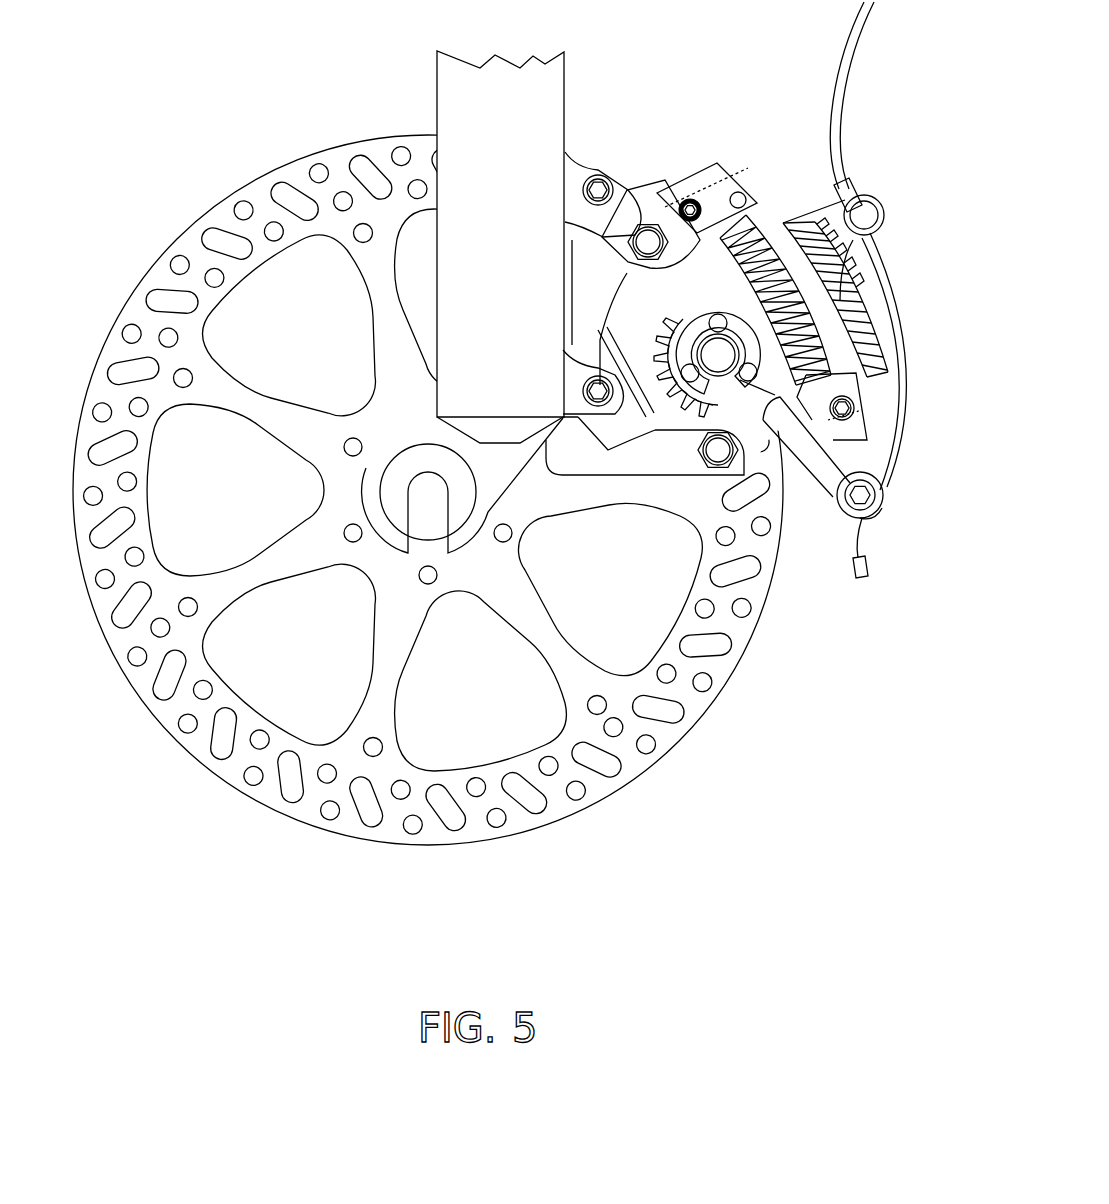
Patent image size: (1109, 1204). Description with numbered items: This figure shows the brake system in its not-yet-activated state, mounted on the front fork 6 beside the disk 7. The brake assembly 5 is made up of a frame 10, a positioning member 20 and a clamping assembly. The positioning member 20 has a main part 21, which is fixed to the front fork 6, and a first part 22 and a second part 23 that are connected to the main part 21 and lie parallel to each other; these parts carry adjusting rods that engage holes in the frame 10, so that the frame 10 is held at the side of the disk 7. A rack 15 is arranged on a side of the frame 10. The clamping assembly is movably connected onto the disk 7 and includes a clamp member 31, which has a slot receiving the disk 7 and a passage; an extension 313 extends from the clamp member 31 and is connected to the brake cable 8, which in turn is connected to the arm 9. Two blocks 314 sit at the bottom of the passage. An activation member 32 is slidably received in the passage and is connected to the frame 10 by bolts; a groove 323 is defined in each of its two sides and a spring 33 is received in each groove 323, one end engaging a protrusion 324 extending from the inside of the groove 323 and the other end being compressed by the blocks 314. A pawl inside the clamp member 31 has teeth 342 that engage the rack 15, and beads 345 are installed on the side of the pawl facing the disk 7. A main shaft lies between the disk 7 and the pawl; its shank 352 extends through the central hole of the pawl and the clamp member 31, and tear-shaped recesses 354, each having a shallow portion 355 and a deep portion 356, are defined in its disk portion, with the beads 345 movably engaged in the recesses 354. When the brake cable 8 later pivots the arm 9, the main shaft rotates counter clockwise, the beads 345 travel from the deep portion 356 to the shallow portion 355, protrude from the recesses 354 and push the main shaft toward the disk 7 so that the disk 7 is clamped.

The brake assembly 5 is at (731, 102).
The front fork 6 is at (455, 107).
The disk 7 is at (260, 198).
The brake cable 8 is at (895, 513).
The arm 9 is at (863, 512).
The frame 10 is at (662, 228).
The rack 15 is at (660, 410).
The positioning member 20 is at (631, 240).
The main part 21 is at (588, 270).
The first part 22 is at (625, 185).
The second part 23 is at (677, 465).
The clamp member 31 is at (838, 288).
The extension 313 is at (870, 203).
The blocks 314 is at (822, 380).
The activation member 32 is at (705, 185).
The groove 323 is at (784, 270).
The protrusion 324 is at (740, 226).
The spring 33 is at (748, 258).
The teeth 342 is at (620, 413).
The beads 345 is at (719, 215).
The shank 352 is at (730, 425).
The tear-shaped recesses 354 is at (688, 203).
The shallow portion 355 is at (727, 382).
The deep portion 356 is at (775, 440).